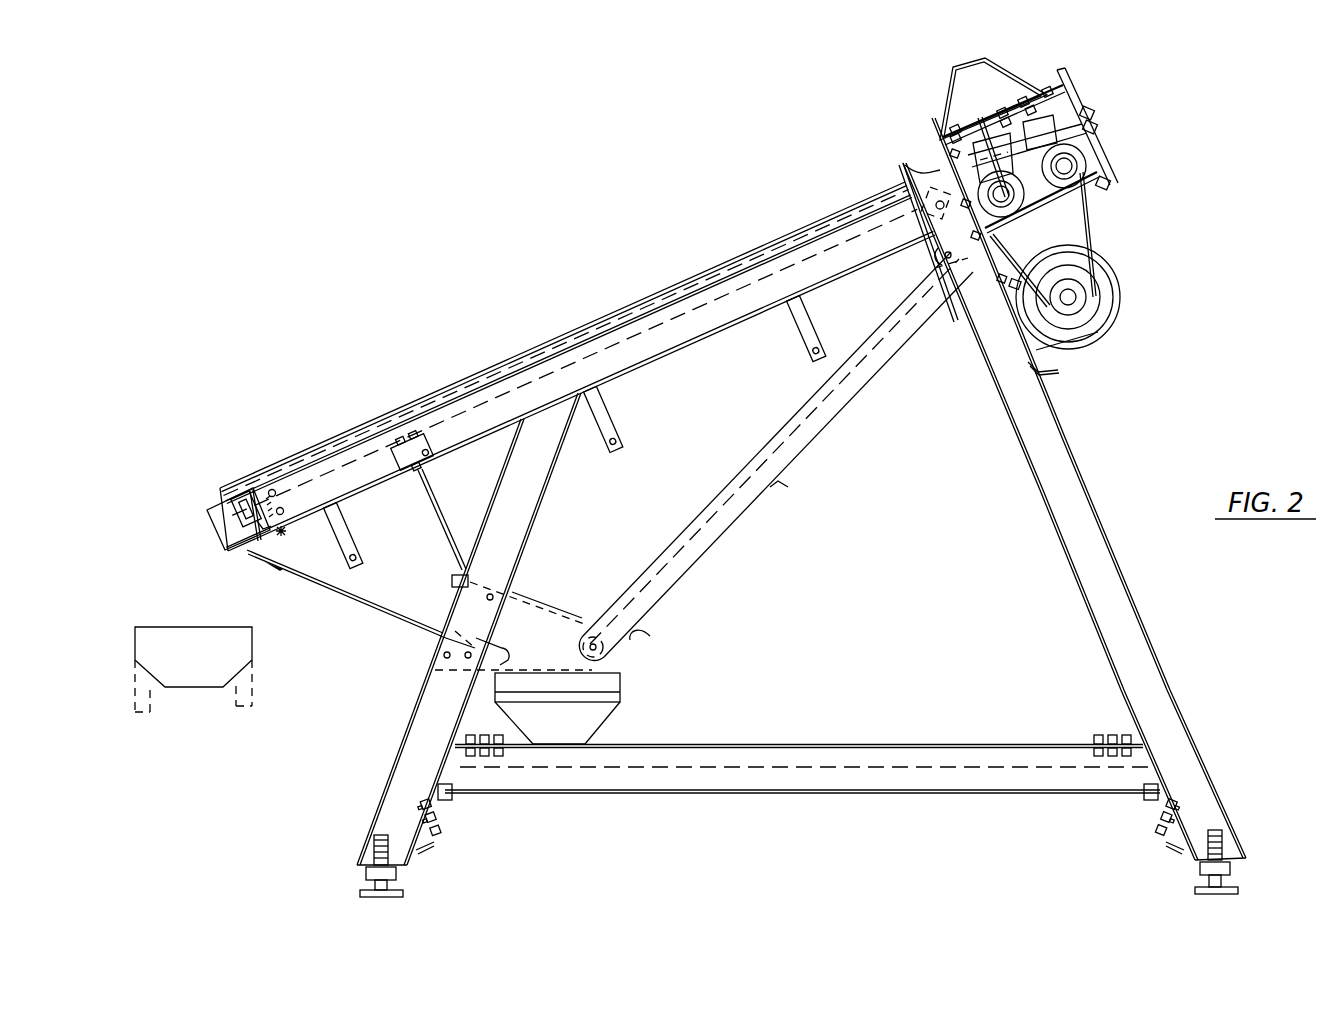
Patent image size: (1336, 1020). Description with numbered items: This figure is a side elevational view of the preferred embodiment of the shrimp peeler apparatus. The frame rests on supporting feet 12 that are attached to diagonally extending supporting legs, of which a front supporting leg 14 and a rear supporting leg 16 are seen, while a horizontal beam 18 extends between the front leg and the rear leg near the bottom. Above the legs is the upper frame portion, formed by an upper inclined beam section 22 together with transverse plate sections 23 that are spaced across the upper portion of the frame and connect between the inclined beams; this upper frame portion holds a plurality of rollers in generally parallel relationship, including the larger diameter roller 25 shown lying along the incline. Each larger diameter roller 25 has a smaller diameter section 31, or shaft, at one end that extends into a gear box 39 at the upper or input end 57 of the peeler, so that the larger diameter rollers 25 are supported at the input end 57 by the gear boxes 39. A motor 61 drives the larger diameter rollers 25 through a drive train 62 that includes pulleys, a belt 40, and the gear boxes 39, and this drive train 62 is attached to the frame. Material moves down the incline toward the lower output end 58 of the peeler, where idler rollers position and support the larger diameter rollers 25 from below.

The supporting feet 12 is at (362, 878).
The supporting leg 14 is at (430, 740).
The supporting leg 16 is at (1062, 488).
The horizontal beam 18 is at (800, 793).
The upper inclined beam section 22 is at (669, 352).
The transverse plate section 23 is at (225, 549).
The larger diameter roller 25 is at (575, 338).
The smaller diameter section 31 is at (905, 170).
The gear box 39 is at (985, 140).
The belt 40 is at (1100, 240).
The upper input end 57 is at (1040, 65).
The output end 58 is at (198, 530).
The motor 61 is at (1110, 333).
The drive train 62 is at (1128, 130).